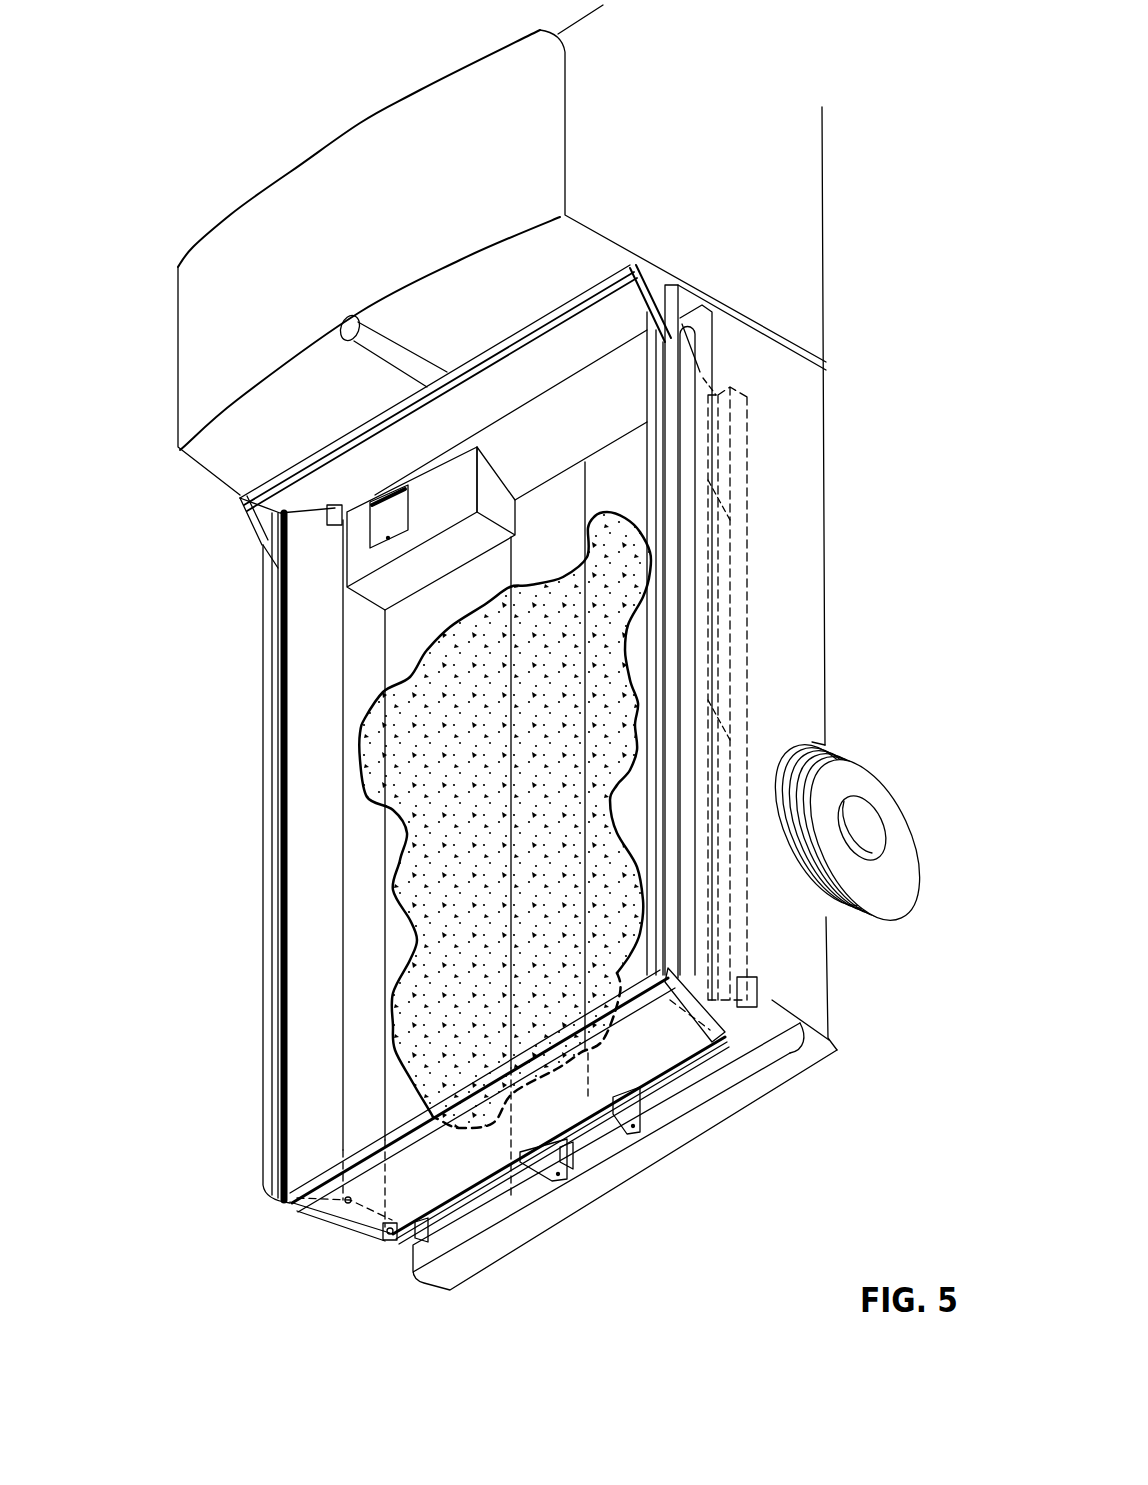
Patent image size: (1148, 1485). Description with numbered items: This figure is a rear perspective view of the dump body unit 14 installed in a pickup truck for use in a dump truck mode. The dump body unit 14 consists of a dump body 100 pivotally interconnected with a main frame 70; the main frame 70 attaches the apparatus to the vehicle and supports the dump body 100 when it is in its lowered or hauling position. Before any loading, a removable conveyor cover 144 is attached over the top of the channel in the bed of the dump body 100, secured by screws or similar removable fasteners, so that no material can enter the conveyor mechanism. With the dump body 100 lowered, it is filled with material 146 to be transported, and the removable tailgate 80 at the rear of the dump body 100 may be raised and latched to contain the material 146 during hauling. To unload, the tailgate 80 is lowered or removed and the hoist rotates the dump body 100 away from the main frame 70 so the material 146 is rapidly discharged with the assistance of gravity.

The dump body unit 14 is at (118, 1083).
The main frame 70 is at (872, 443).
The removable tailgate 80 is at (367, 1285).
The dump body 100 is at (317, 627).
The removable conveyor cover 144 is at (630, 1245).
The material 146 is at (430, 813).